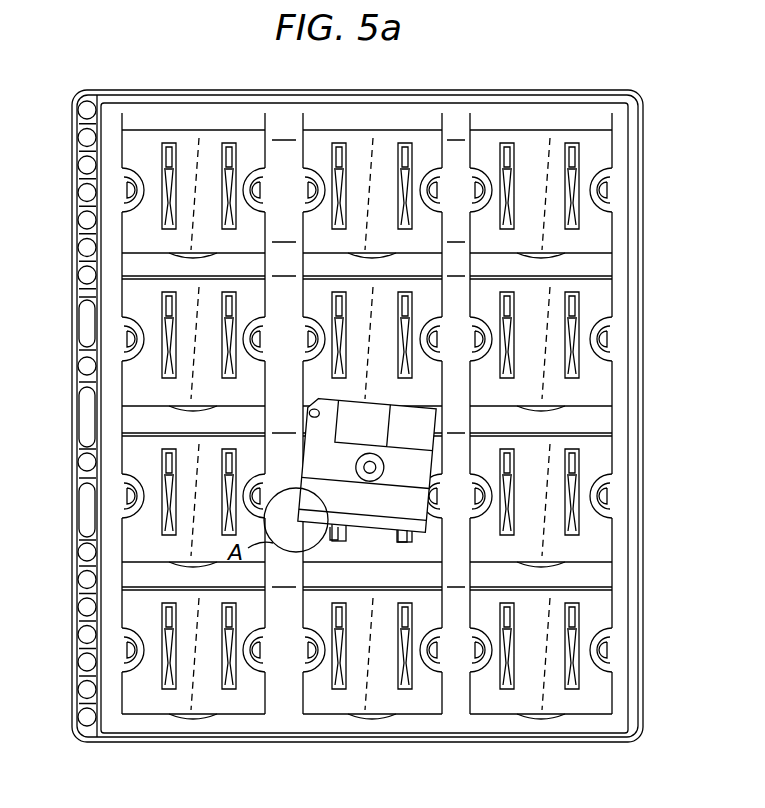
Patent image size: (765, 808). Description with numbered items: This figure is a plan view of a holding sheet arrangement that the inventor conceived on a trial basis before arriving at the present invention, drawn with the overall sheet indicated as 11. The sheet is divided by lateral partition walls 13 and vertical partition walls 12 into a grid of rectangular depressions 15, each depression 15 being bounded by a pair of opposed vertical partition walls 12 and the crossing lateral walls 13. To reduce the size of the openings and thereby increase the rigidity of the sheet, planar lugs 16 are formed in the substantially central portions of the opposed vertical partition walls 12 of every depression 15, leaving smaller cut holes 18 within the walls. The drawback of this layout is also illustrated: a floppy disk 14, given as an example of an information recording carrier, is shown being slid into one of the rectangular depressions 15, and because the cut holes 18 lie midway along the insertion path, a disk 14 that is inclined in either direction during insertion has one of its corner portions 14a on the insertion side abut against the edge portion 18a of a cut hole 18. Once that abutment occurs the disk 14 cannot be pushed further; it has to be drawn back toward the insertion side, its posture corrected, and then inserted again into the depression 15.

The tray package 11 is at (543, 85).
The vertical partition walls 12 is at (272, 134).
The lateral partition walls 13 is at (143, 417).
The floppy disk 14 is at (413, 468).
The corner portion 14a is at (368, 528).
The rectangular depression 15 is at (534, 161).
The planar lug 16 is at (113, 230).
The cut hole 18 is at (268, 197).
The edge portion 18a is at (515, 603).